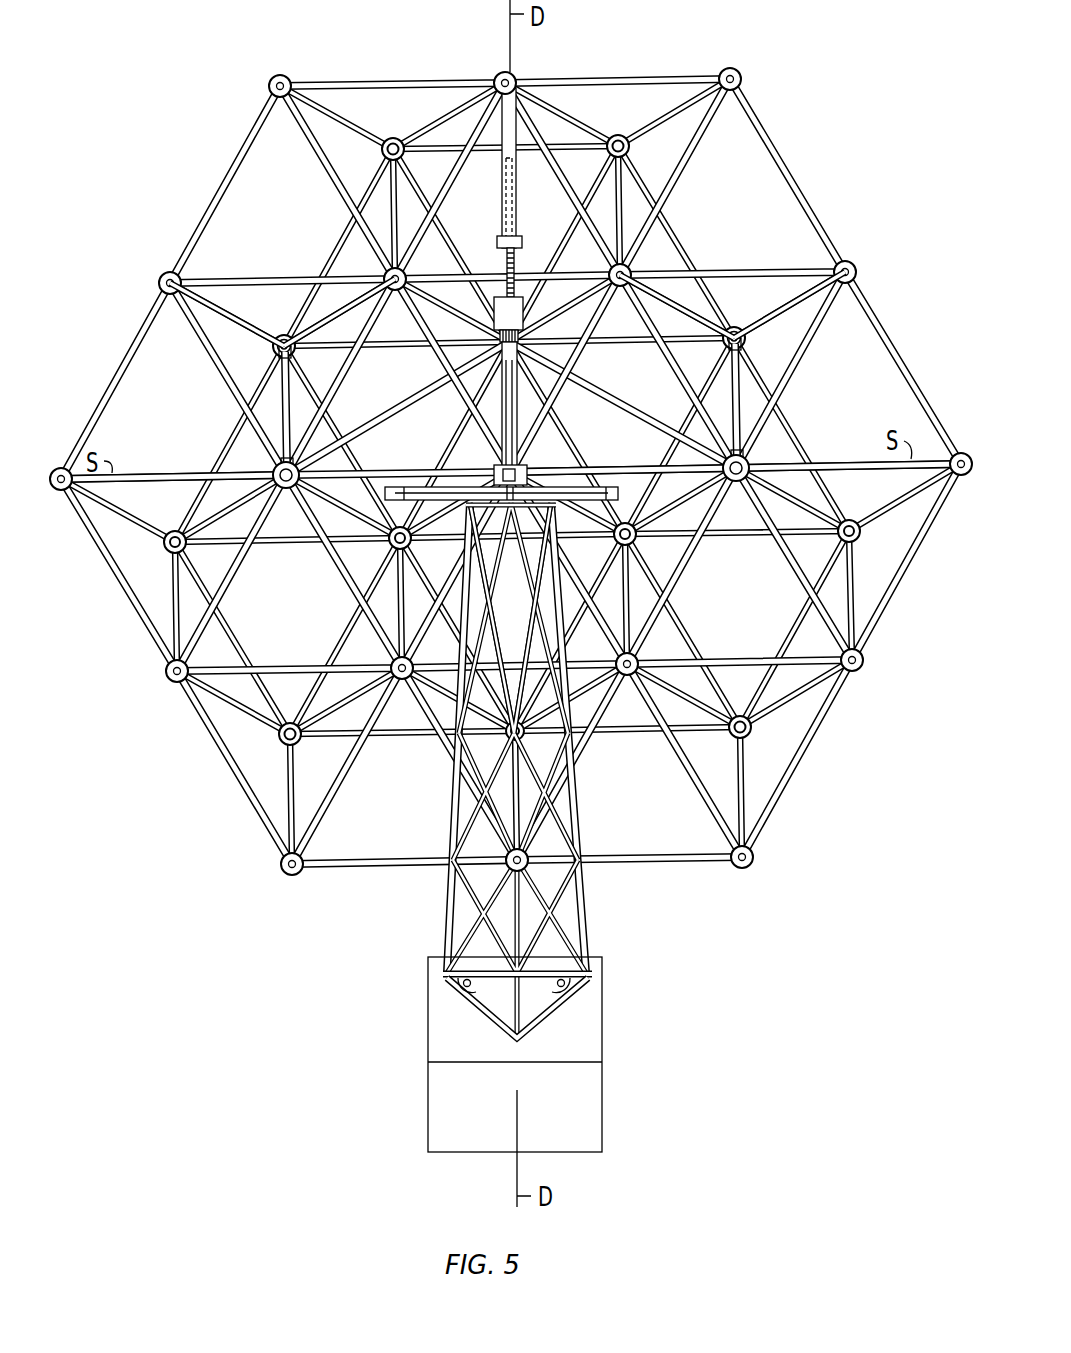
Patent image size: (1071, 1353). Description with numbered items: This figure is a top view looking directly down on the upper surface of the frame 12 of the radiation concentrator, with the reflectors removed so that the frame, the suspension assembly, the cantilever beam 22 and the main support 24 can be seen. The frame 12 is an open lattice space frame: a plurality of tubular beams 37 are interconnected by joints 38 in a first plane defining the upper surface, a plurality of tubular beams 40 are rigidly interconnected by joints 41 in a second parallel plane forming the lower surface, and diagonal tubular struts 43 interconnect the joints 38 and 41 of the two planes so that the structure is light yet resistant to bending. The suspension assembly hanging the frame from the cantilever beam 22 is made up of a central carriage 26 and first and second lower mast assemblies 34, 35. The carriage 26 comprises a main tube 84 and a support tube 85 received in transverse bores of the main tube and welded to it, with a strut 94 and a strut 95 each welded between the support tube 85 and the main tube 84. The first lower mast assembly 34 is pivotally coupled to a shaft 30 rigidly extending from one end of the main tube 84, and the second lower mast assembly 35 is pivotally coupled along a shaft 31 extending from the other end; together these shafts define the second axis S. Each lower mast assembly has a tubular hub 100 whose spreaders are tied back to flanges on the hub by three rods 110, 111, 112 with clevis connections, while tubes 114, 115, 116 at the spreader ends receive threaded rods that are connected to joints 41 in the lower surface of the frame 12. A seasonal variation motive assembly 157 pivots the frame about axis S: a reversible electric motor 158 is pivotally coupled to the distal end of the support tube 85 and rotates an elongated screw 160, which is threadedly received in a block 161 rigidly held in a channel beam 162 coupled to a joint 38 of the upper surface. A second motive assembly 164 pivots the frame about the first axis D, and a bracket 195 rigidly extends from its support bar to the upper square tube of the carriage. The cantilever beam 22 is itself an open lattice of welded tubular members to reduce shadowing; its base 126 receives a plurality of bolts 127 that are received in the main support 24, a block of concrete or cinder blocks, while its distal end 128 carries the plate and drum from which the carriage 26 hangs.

The frame 12 is at (803, 193).
The cantilever beam 22 is at (584, 932).
The main support 24 is at (605, 1120).
The central carriage 26 is at (600, 462).
The shaft 30 is at (770, 455).
The shaft 31 is at (260, 472).
The first lower mast assembly 34 is at (772, 457).
The second lower mast assembly 35 is at (248, 443).
The tubular beams 37 is at (684, 188).
The joints 38 is at (281, 74).
The tubular beams 40 is at (440, 132).
The joints 41 is at (392, 138).
The diagonal tubular struts 43 is at (384, 174).
The main tube 84 is at (654, 482).
The support tube 85 is at (496, 468).
The strut 94 is at (382, 414).
The strut 95 is at (592, 388).
The tubular hub 100 is at (281, 489).
The rod 110 is at (336, 517).
The rod 111 is at (226, 532).
The rod 112 is at (272, 356).
The tube 114 is at (406, 548).
The tube 115 is at (166, 548).
The tube 116 is at (283, 333).
The base 126 is at (562, 1013).
The bolts 127 is at (462, 985).
The distal end 128 is at (565, 520).
The seasonal variation motive assembly 157 is at (487, 255).
The reversible electric motor 158 is at (526, 292).
The elongated screw 160 is at (566, 224).
The block 161 is at (545, 186).
The channel beam 162 is at (522, 112).
The motive assembly 164 is at (408, 488).
The bracket 195 is at (532, 460).